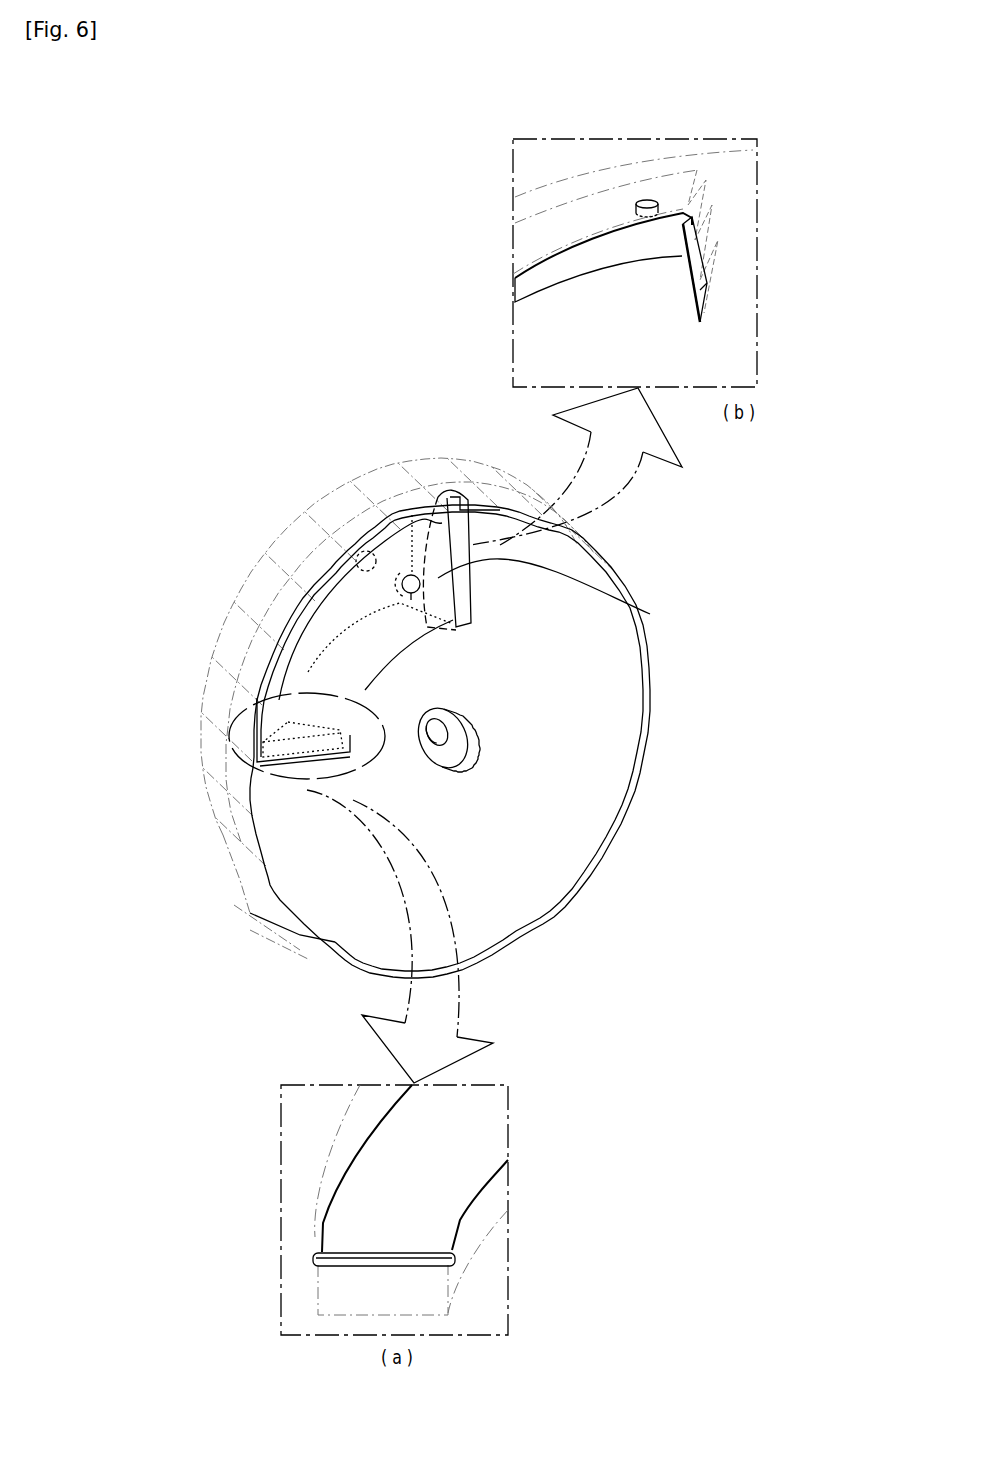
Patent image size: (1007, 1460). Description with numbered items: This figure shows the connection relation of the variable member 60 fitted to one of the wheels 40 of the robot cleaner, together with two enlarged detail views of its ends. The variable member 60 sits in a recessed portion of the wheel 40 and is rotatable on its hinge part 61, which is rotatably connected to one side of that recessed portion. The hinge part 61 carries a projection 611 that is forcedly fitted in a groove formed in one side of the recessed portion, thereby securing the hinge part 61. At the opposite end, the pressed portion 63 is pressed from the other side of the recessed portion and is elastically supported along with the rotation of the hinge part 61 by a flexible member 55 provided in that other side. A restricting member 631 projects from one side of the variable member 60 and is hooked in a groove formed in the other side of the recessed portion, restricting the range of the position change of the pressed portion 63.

The wheels 40 is at (255, 878).
The flexible member 55 is at (646, 200).
The variable member 60 is at (345, 652).
The hinge part 61 is at (285, 745).
The projection 611 is at (317, 1257).
The pressed portion 63 is at (650, 614).
The restricting member 631 is at (705, 258).